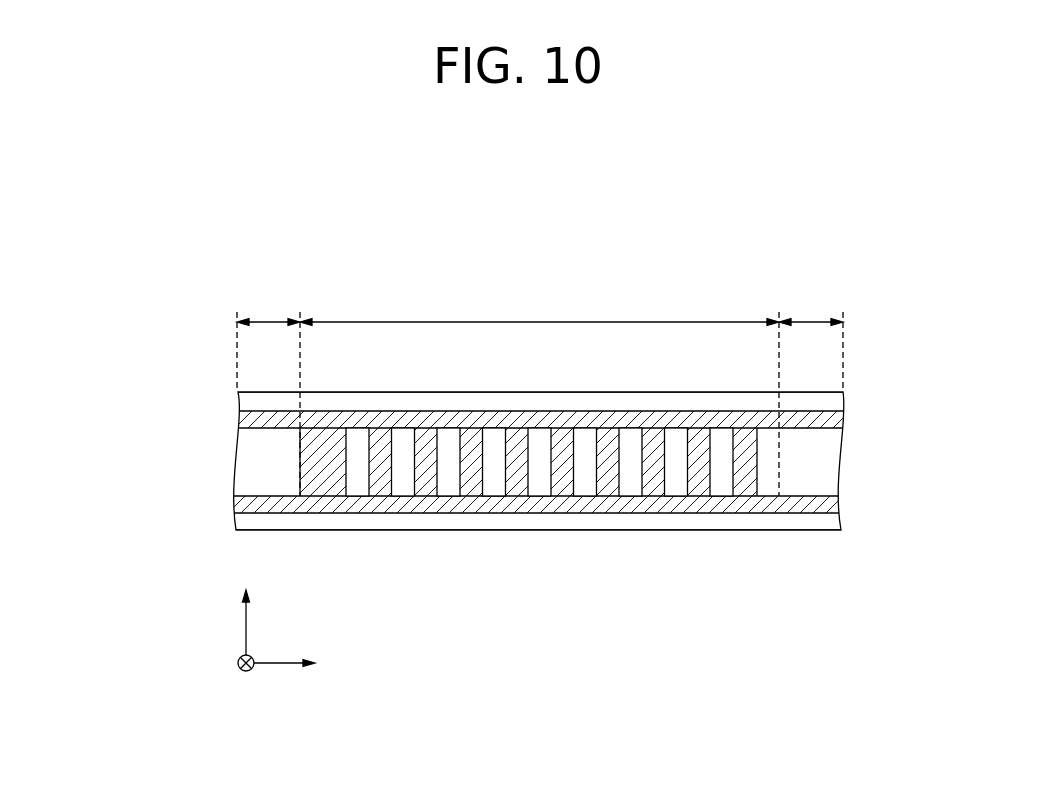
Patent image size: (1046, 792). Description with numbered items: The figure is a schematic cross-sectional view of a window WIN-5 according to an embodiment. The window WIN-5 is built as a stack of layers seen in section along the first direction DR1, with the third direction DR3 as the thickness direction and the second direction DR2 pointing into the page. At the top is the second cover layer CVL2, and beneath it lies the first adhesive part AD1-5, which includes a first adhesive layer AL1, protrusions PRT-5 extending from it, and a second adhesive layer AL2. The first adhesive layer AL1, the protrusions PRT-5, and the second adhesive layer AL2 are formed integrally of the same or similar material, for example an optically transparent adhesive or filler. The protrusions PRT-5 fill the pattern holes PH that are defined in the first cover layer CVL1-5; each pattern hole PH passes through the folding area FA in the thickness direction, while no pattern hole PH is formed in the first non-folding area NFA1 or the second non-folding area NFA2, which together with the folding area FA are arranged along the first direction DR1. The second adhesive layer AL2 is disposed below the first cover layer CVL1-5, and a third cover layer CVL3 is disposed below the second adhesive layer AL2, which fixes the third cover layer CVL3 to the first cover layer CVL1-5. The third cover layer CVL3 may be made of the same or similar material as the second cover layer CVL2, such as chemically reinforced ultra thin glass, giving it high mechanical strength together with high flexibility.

The window WIN-5 is at (750, 252).
The second cover layer CVL2 is at (832, 403).
The first cover layer CVL1-5 is at (828, 462).
The third cover layer CVL3 is at (832, 522).
The first adhesive part AD1-5 is at (451, 462).
The first adhesive layer AL1 is at (253, 417).
The protrusions PRT-5 is at (336, 458).
The second adhesive layer AL2 is at (506, 504).
The pattern hole PH is at (383, 467).
The first non-folding area NFA1 is at (268, 391).
The folding area FA is at (539, 306).
The second non-folding area NFA2 is at (811, 391).
The first direction DR1 is at (304, 664).
The second direction DR2 is at (246, 677).
The third direction DR3 is at (246, 609).